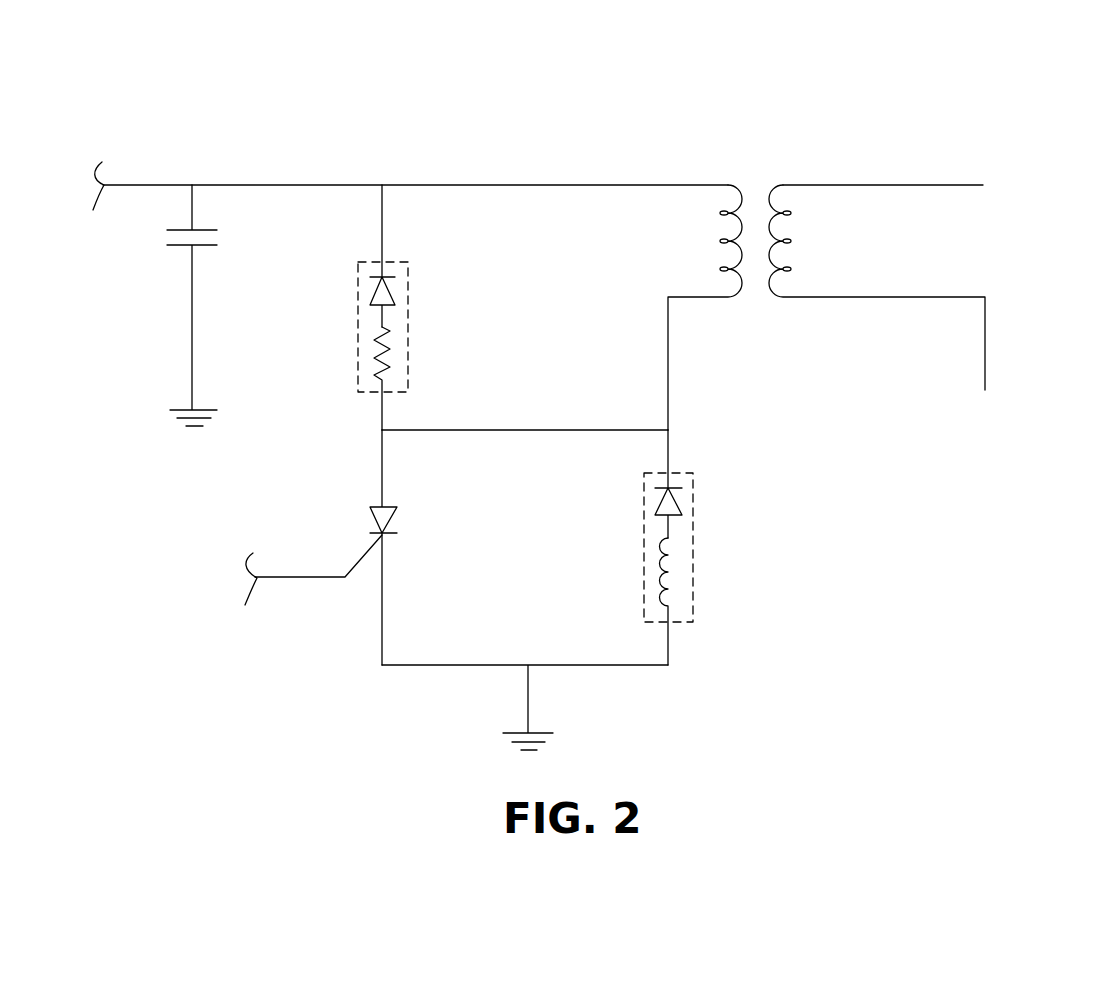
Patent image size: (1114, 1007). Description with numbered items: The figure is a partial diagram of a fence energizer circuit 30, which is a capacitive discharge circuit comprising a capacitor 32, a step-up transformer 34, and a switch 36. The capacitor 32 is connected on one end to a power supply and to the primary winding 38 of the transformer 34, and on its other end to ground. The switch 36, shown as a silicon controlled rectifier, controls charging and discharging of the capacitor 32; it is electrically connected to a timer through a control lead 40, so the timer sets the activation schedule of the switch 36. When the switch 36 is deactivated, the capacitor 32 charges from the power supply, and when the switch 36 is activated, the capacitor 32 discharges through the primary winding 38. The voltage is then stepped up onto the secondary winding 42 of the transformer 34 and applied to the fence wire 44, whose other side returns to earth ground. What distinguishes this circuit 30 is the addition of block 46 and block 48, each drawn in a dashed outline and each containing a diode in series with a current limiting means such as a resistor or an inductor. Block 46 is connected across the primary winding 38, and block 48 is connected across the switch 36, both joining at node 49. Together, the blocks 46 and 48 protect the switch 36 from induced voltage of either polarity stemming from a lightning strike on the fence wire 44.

The circuit 30 is at (553, 92).
The capacitor 32 is at (151, 250).
The step-up transformer 34 is at (815, 266).
The switch 36 is at (403, 515).
The primary winding 38 is at (715, 242).
The control lead 40 is at (300, 578).
The secondary winding 42 is at (797, 242).
The fence wire 44 is at (1040, 155).
The block 46 is at (408, 325).
The block 48 is at (693, 545).
The node 49 is at (522, 430).